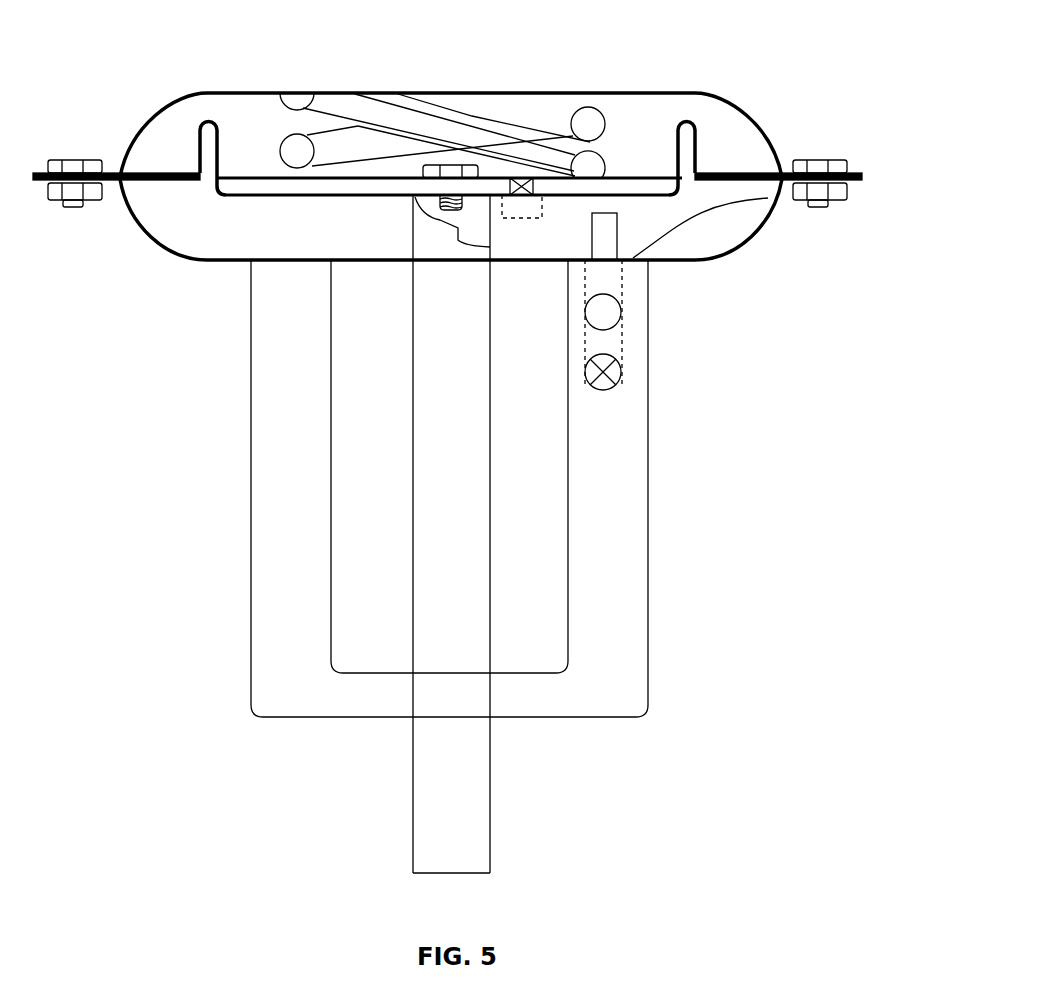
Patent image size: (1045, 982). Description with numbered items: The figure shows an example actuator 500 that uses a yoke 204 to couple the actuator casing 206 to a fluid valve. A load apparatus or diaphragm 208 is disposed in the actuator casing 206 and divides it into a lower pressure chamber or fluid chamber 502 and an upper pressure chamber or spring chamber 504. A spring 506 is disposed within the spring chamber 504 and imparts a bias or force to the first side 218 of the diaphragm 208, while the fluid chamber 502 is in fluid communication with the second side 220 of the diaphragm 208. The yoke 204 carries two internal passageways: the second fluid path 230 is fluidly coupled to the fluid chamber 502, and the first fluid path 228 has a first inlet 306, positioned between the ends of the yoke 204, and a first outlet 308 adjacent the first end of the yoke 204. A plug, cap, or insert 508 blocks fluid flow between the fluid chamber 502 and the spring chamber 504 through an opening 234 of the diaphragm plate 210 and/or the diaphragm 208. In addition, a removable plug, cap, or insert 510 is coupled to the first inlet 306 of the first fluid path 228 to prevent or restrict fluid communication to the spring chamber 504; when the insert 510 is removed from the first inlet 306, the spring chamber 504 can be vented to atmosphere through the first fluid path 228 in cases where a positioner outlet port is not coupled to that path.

The actuator 500 is at (850, 106).
The yoke 204 is at (650, 678).
The actuator casing 206 is at (137, 152).
The diaphragm 208 is at (740, 172).
The diaphragm plate 210 is at (260, 176).
The first side of the diaphragm 218 is at (187, 170).
The second side of the diaphragm 220 is at (173, 183).
The first fluid path 228 is at (613, 343).
The second fluid path 230 is at (612, 272).
The opening of the diaphragm plate 234 is at (525, 195).
The first inlet 306 is at (622, 372).
The first outlet 308 is at (622, 315).
The fluid chamber 502 is at (352, 240).
The spring chamber 504 is at (662, 155).
The spring 506 is at (576, 108).
The insert 508 is at (520, 178).
The removable insert 510 is at (603, 373).